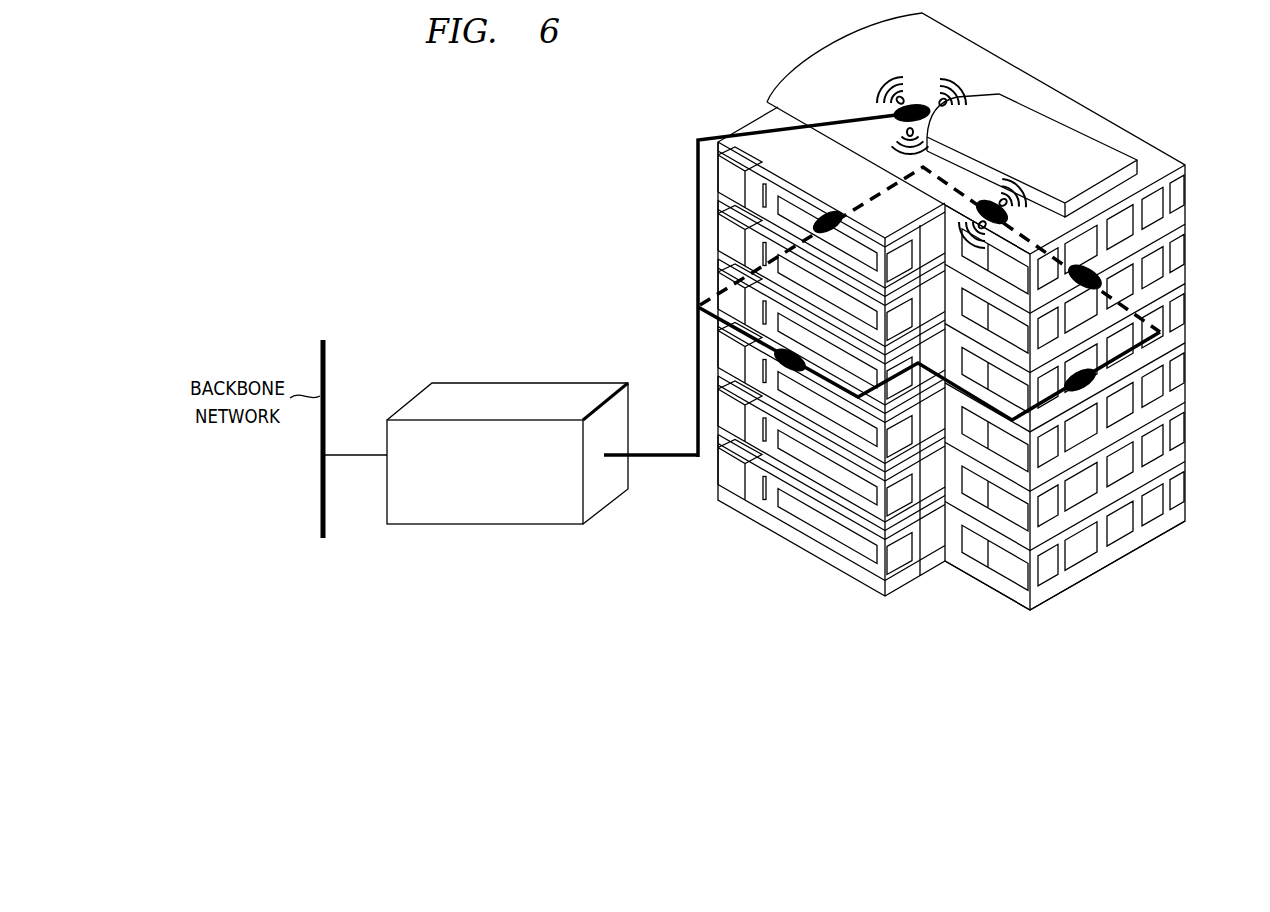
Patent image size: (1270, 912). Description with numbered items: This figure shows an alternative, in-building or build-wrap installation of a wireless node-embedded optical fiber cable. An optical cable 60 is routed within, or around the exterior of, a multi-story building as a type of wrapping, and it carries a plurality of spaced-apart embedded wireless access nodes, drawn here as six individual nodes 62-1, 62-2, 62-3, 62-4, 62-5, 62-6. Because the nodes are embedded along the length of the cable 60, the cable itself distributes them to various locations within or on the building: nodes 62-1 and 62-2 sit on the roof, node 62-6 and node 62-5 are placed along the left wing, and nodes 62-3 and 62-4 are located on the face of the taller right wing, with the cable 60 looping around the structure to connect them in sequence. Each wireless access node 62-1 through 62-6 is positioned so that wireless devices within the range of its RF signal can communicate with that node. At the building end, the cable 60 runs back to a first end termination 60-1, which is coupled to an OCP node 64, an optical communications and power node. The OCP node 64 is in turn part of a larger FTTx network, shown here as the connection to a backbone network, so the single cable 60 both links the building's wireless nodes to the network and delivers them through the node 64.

The optical cable 60 is at (697, 218).
The first end termination 60-1 is at (605, 457).
The embedded wireless access node 62-1 is at (912, 105).
The embedded wireless access node 62-2 is at (990, 203).
The embedded wireless access node 62-3 is at (1100, 277).
The embedded wireless access node 62-4 is at (1097, 380).
The embedded wireless access node 62-5 is at (790, 368).
The embedded wireless access node 62-6 is at (830, 214).
The OCP node 64 is at (482, 524).